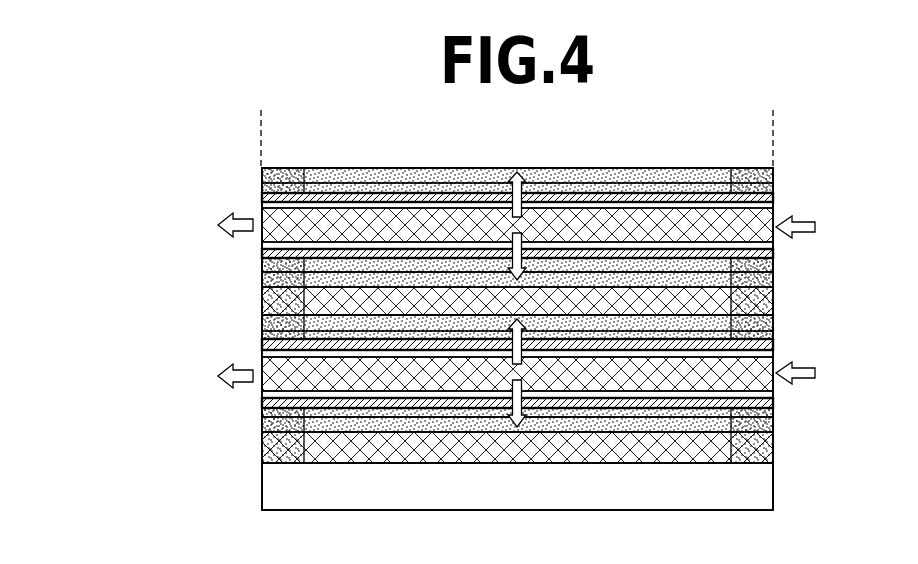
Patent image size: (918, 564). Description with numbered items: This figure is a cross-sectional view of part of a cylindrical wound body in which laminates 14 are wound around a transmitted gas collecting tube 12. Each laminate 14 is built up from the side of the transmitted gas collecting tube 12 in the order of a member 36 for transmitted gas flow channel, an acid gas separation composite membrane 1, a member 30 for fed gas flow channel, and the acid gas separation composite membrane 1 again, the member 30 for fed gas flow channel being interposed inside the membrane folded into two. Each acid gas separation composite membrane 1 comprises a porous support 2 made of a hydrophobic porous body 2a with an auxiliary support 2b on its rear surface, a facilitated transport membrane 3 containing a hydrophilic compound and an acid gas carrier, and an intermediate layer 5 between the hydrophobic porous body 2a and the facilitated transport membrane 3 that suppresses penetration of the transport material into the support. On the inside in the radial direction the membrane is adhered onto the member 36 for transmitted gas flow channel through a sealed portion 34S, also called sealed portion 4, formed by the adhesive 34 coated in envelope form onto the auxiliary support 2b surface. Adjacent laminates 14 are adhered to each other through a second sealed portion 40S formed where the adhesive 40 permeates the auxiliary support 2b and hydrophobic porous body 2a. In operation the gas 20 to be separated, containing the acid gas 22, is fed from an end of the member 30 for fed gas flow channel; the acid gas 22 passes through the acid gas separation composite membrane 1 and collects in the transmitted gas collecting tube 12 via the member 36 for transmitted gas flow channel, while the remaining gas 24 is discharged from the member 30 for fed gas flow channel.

The acid gas separation composite membrane 1 is at (455, 291).
The porous support 2 is at (429, 291).
The hydrophobic porous body 2a is at (303, 188).
The auxiliary support 2b is at (303, 177).
The facilitated transport membrane 3 is at (268, 199).
The sealed portion 4 is at (474, 303).
The intermediate layer 5 is at (262, 196).
The transmitted gas collecting tube 12 is at (765, 488).
The laminate 14 is at (441, 277).
The gas to be separated 20 is at (815, 227).
The acid gas 22 is at (527, 345).
The remaining gas 24 is at (218, 222).
The member for fed gas flow channel 30 is at (268, 213).
The adhesive 34 is at (522, 340).
The sealed portion 34S is at (773, 302).
The member for transmitted gas flow channel 36 is at (382, 297).
The adhesive 40 is at (469, 291).
The second sealed portion 40S is at (762, 168).